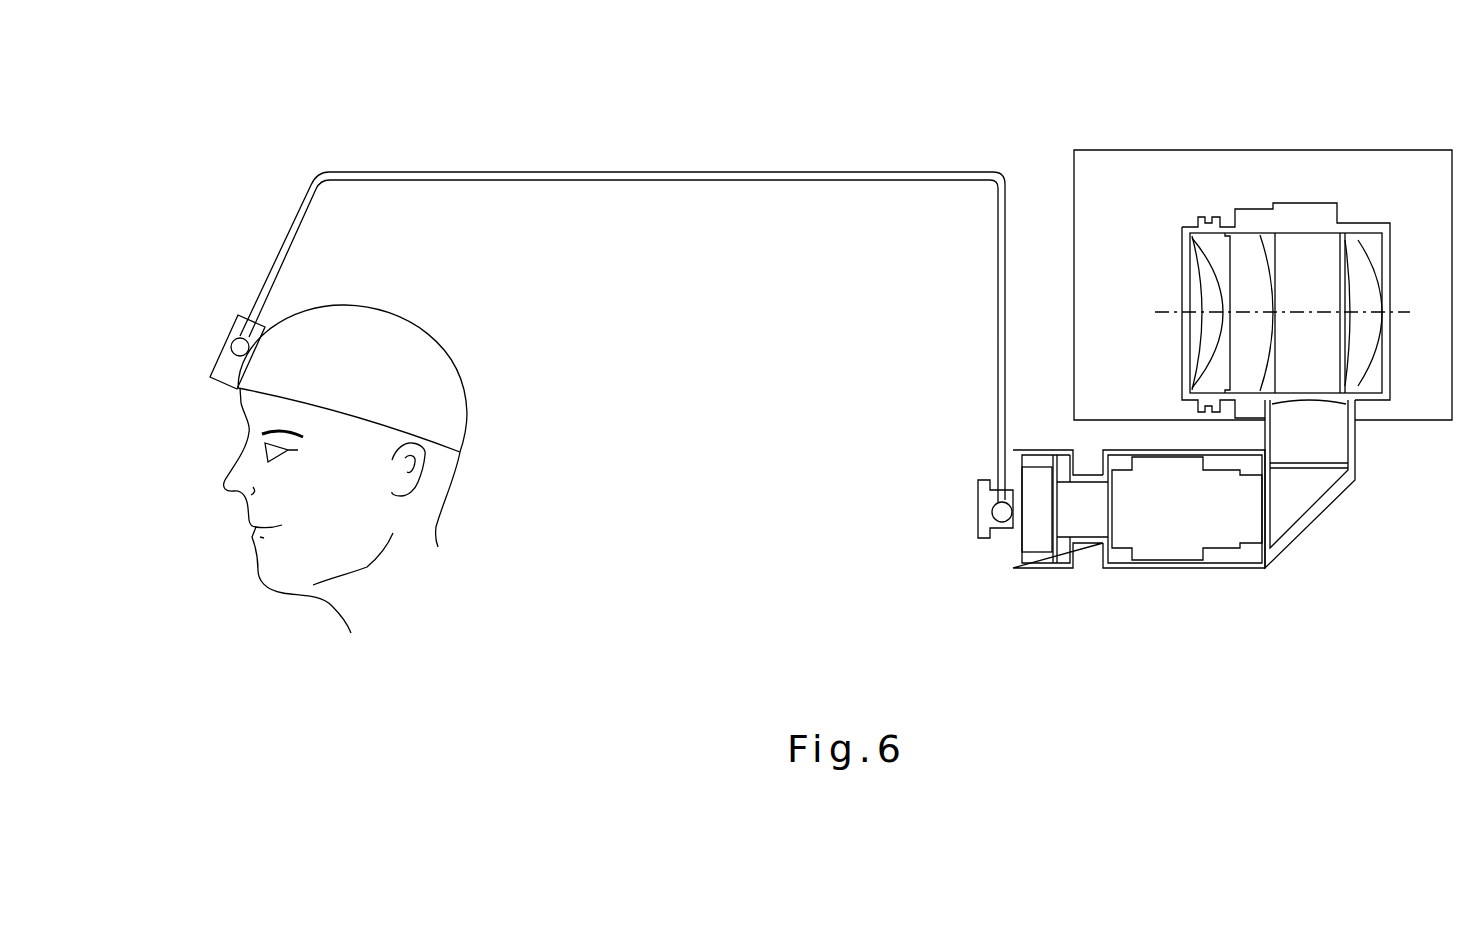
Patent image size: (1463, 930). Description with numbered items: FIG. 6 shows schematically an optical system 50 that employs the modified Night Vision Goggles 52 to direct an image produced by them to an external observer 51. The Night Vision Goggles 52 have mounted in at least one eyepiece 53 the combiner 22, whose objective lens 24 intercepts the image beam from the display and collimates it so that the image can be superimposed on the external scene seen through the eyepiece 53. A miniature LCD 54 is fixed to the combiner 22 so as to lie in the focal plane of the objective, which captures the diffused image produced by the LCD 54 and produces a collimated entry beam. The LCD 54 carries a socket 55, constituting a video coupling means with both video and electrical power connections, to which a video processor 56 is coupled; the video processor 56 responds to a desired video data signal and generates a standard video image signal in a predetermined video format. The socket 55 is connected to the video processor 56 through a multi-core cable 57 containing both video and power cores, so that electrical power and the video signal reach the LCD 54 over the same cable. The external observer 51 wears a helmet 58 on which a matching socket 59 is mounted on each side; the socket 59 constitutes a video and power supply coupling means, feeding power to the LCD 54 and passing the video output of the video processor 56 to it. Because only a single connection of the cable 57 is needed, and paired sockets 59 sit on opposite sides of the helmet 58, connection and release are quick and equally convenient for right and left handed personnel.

The combiner 22 is at (1325, 537).
The objective lens 24 is at (1182, 570).
The optical system 50 is at (727, 505).
The external observer 51 is at (405, 582).
The Night Vision Goggles 52 is at (1252, 150).
The eyepiece 53 is at (1182, 273).
The miniature LCD 54 is at (1043, 570).
The socket 55 is at (991, 514).
The video processor 56 is at (225, 388).
The multi-core cable 57 is at (315, 172).
The helmet 58 is at (455, 362).
The matching socket 59 is at (231, 346).